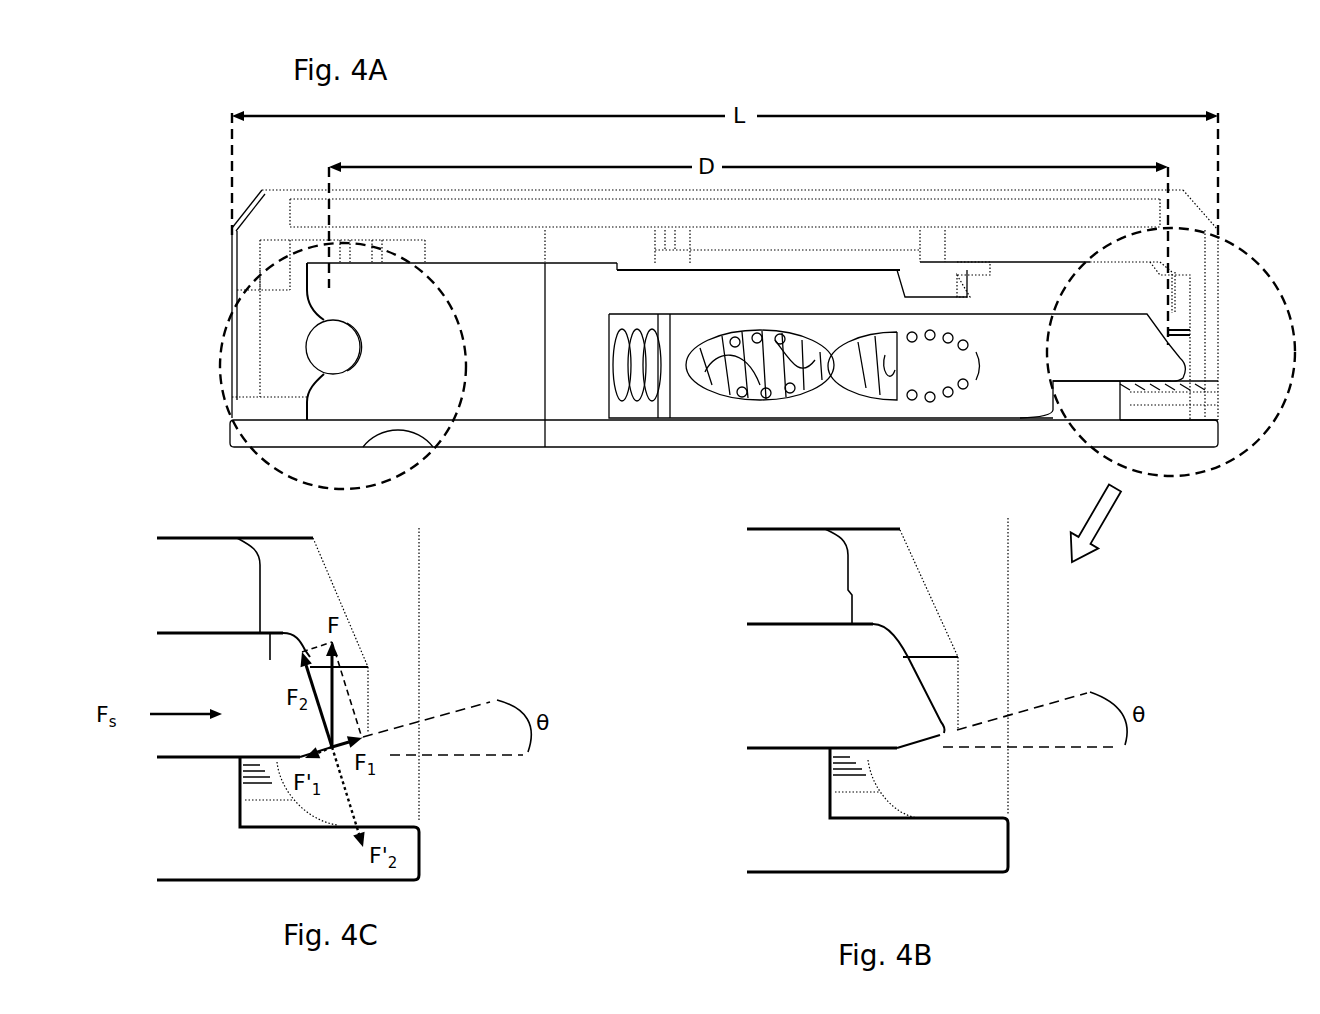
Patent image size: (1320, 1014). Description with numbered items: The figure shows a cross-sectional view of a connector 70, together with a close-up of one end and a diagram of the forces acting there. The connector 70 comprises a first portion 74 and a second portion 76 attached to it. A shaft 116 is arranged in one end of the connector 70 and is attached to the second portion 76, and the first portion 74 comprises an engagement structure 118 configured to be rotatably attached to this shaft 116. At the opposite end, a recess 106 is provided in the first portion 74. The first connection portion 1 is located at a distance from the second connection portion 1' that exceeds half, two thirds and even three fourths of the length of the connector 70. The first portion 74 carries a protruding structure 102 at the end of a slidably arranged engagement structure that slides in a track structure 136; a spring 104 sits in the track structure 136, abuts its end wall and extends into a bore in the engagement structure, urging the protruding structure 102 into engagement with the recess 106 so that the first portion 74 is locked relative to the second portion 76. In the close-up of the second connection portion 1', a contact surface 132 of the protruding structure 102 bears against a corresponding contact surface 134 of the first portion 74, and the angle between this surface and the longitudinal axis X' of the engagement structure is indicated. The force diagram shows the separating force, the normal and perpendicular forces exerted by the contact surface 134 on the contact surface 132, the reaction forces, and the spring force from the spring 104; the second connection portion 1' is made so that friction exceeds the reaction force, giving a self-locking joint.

In FIG. 4A, the connector 70 is at (190, 178).
In FIG. 4A, the first connection portion 1 is at (329, 323).
In FIG. 4A, the second connection portion 1' is at (1230, 428).
In FIG. 4A, the first portion 74 is at (1023, 207).
In FIG. 4A, the second portion 76 is at (570, 447).
In FIG. 4A, the protruding structure 102 is at (1148, 357).
In FIG. 4C, the protruding structure 102 is at (270, 662).
In FIG. 4B, the protruding structure 102 is at (897, 682).
In FIG. 4A, the spring 104 is at (650, 400).
In FIG. 4A, the recess 106 is at (1190, 335).
In FIG. 4C, the recess 106 is at (357, 697).
In FIG. 4B, the recess 106 is at (945, 688).
In FIG. 4A, the shaft 116 is at (307, 345).
In FIG. 4A, the engagement structure 118 is at (333, 398).
In FIG. 4C, the contact surface 132 is at (317, 737).
In FIG. 4B, the contact surface 132 is at (912, 730).
In FIG. 4C, the contact surface 134 is at (343, 753).
In FIG. 4B, the contact surface 134 is at (932, 747).
In FIG. 4A, the track structure 136 is at (627, 400).
In FIG. 4B, the longitudinal axis X' is at (1048, 799).